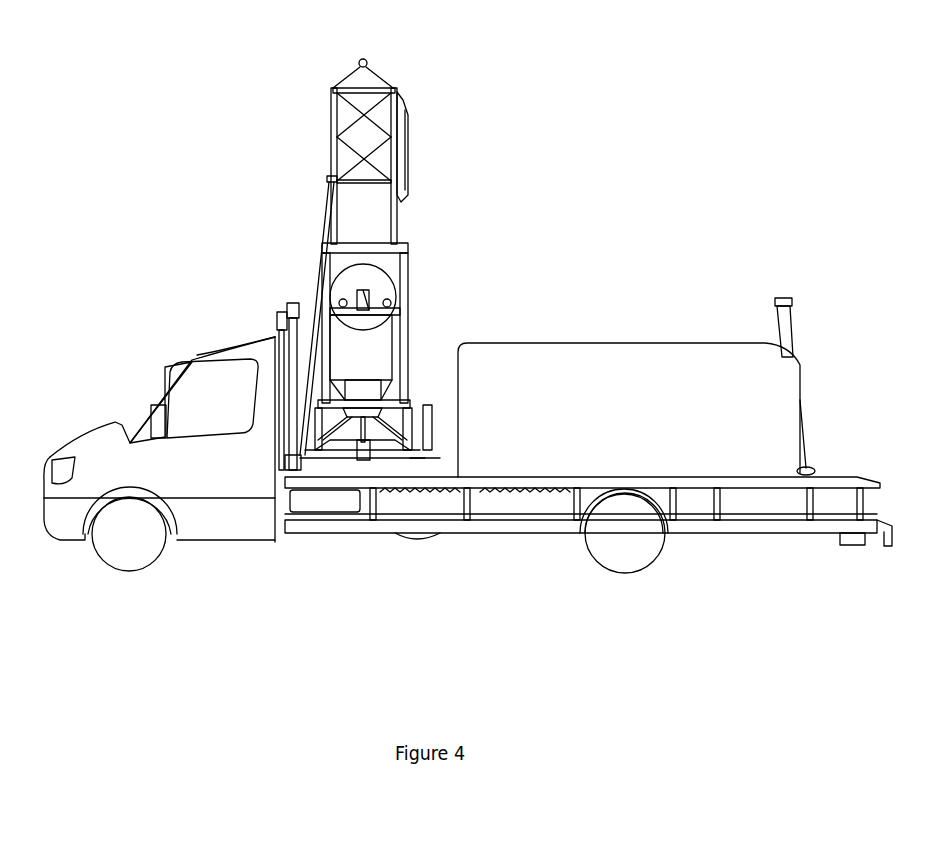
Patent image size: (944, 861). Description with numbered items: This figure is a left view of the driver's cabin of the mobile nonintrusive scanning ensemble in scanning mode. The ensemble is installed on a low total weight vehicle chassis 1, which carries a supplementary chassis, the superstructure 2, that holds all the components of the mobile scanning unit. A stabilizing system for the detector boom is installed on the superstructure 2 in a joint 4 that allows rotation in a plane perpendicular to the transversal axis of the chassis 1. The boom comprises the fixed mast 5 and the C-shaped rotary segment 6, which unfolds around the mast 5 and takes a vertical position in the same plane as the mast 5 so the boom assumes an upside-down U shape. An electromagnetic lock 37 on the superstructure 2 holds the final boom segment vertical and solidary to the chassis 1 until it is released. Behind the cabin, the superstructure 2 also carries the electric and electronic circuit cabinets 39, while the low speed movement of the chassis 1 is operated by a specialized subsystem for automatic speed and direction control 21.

The chassis 1 is at (638, 555).
The superstructure 2 is at (848, 475).
The joint 4 is at (387, 447).
The mast 5 is at (378, 345).
The C-shaped rotary segment 6 is at (363, 80).
The subsystem for automatic speed and direction control 21 is at (200, 408).
The electromagnetic lock 37 is at (795, 304).
The electric and electronic circuit cabinets 39 is at (513, 440).